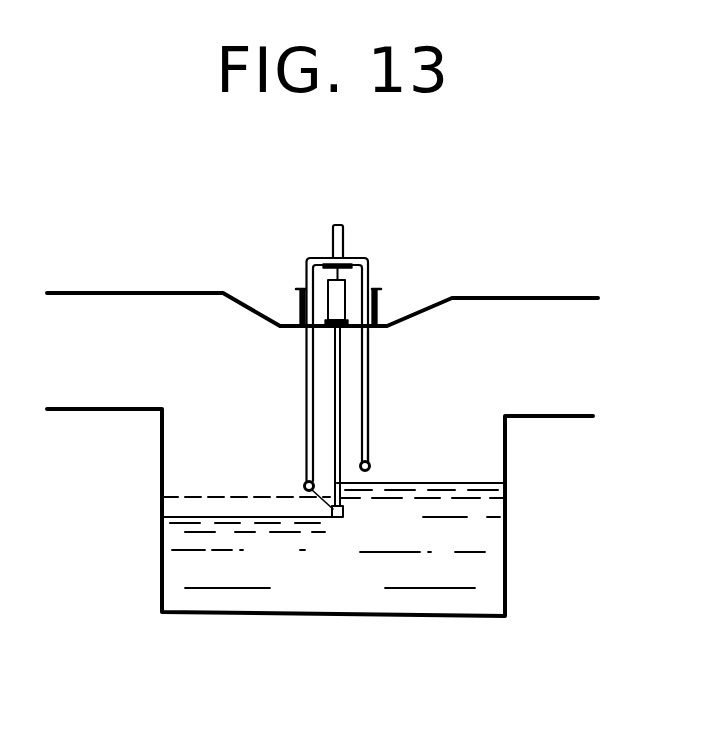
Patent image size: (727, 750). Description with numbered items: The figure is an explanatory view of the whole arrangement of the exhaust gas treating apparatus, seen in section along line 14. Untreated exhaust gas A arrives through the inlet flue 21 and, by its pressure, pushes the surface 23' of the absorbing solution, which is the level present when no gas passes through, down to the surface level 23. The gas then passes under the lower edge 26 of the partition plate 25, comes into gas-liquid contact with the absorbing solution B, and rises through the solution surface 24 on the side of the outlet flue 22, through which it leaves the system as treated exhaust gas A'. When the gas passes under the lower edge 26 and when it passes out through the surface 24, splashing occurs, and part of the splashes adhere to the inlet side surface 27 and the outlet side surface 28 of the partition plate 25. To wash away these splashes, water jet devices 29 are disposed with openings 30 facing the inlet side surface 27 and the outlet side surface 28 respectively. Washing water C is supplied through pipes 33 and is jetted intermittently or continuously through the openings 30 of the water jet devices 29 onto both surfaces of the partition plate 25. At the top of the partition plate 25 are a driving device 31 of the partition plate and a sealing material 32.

The section line 14 is at (255, 297).
The inlet flue 21 is at (72, 300).
The outlet flue 22 is at (494, 304).
The surface level of the solution 23 is at (320, 512).
The surface of the absorbing solution 23' is at (246, 464).
The solution surface 24 is at (488, 483).
The partition plate 25 is at (341, 352).
The lower edge of the partition plate 26 is at (337, 518).
The inlet side surface of the partition plate 27 is at (334, 398).
The outlet side surface of the partition plate 28 is at (338, 432).
The water jet device 29 is at (307, 483).
The opening of the water jet device 30 is at (343, 514).
The driving device of the partition plate 31 is at (364, 268).
The sealing material 32 is at (378, 298).
The pipe 33 is at (306, 356).
The untreated exhaust gas A is at (140, 358).
The absorbing solution B is at (490, 576).
The washing water C is at (338, 205).